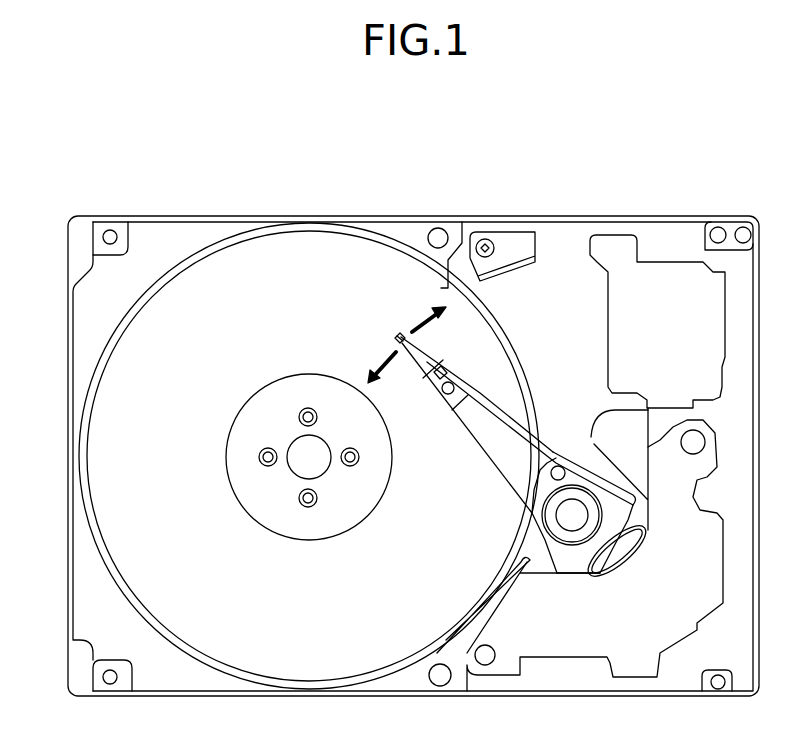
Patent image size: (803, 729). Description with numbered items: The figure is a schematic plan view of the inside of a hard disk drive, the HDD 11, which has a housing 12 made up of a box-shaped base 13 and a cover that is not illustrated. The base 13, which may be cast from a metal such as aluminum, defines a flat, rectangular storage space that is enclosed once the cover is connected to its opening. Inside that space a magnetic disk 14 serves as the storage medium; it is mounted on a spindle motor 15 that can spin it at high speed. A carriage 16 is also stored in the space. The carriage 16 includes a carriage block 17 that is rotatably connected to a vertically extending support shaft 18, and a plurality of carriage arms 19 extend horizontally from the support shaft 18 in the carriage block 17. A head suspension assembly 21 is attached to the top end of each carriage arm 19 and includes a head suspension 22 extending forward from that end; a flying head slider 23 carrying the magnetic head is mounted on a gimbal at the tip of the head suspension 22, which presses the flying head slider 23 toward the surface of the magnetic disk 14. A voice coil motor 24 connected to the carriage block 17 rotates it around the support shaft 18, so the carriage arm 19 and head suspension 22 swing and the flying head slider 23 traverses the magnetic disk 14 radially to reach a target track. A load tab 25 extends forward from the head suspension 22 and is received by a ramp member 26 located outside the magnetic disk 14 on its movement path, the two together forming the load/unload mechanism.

The HDD 11 is at (128, 185).
The housing 12 is at (412, 215).
The base 13 is at (68, 352).
The magnetic disk 14 is at (142, 308).
The spindle motor 15 is at (297, 471).
The carriage 16 is at (498, 480).
The carriage block 17 is at (523, 547).
The support shaft 18 is at (573, 503).
The carriage arm 19 is at (474, 451).
The head suspension assembly 21 is at (380, 341).
The head suspension 22 is at (427, 352).
The flying head slider 23 is at (400, 352).
The voice coil motor 24 is at (602, 577).
The load tab 25 is at (397, 333).
The ramp member 26 is at (538, 240).